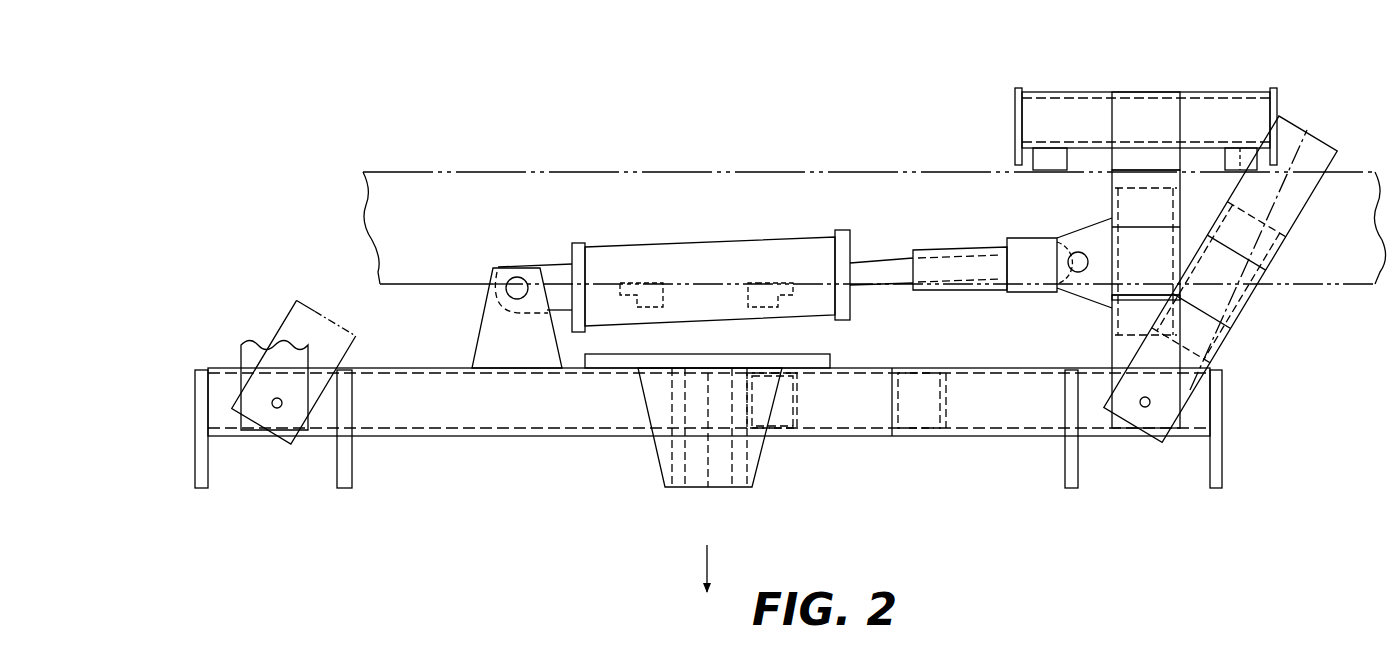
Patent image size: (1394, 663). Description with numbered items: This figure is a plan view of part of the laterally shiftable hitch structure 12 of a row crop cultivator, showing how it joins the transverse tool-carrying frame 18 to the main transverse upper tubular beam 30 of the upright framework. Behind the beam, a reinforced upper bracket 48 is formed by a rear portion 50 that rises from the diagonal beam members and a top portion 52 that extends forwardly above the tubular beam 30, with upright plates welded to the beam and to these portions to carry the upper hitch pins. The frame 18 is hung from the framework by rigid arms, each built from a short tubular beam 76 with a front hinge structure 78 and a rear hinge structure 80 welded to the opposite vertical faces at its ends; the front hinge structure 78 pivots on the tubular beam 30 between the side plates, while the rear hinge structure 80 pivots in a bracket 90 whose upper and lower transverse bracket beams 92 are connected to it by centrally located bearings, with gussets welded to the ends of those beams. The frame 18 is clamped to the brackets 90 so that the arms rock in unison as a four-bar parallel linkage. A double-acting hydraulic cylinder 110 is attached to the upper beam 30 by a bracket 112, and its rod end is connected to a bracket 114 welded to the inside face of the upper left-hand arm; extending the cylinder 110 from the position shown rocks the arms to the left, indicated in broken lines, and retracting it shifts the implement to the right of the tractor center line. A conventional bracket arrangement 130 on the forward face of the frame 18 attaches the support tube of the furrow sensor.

The hitch structure 12 is at (1309, 446).
The transverse tool-carrying frame 18 is at (1357, 170).
The tubular beam 30 is at (1028, 427).
The reinforced upper bracket 48 is at (697, 448).
The rear portion 50 is at (821, 356).
The top portion 52 is at (718, 489).
The short tubular beam 76 is at (1172, 243).
The front hinge structure 78 is at (1112, 352).
The rear hinge structure 80 is at (1140, 102).
The brackets 90 is at (1151, 103).
The transverse bracket beams 92 is at (1225, 92).
The double-acting hydraulic cylinder 110 is at (705, 281).
The bracket 112 is at (483, 335).
The bracket 114 is at (1108, 220).
The bracket arrangement 130 is at (718, 295).